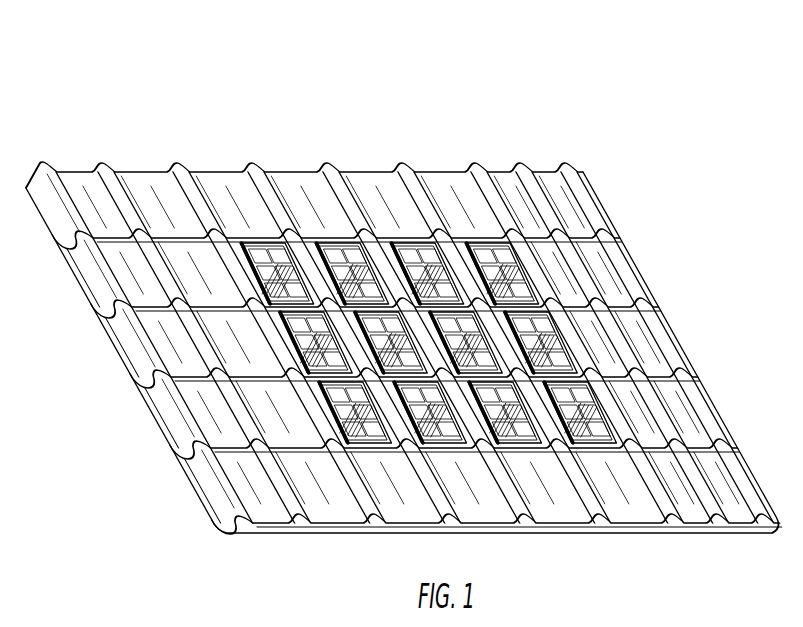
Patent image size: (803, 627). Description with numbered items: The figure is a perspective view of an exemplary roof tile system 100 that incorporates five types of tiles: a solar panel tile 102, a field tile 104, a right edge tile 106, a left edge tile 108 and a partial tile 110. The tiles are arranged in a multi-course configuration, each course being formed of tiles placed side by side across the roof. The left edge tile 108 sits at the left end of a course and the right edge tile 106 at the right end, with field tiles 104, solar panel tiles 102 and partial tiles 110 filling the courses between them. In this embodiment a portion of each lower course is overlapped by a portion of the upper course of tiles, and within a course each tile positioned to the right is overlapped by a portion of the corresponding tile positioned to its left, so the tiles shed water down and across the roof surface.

The roof tile system 100 is at (398, 275).
The solar panel tile 102 is at (358, 250).
The field tile 104 is at (225, 183).
The right edge tile 106 is at (737, 498).
The left edge tile 108 is at (87, 187).
The partial tile 110 is at (513, 180).